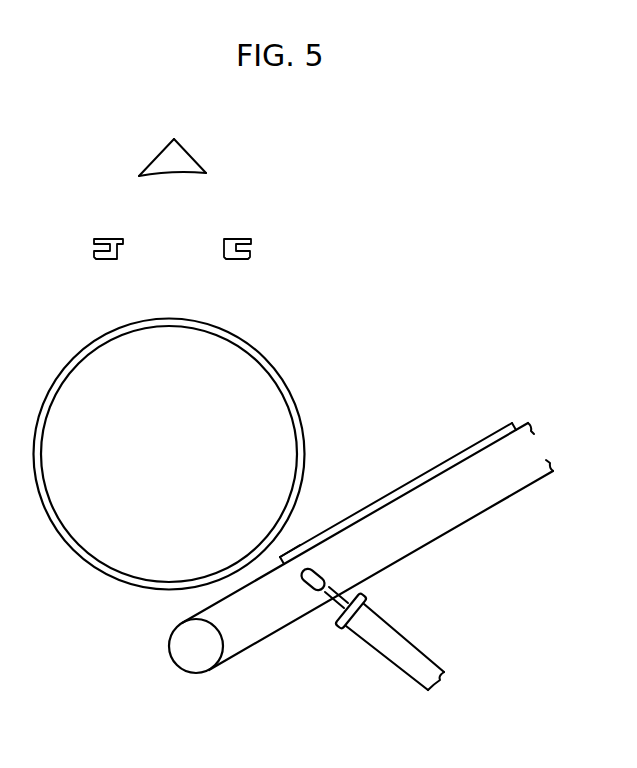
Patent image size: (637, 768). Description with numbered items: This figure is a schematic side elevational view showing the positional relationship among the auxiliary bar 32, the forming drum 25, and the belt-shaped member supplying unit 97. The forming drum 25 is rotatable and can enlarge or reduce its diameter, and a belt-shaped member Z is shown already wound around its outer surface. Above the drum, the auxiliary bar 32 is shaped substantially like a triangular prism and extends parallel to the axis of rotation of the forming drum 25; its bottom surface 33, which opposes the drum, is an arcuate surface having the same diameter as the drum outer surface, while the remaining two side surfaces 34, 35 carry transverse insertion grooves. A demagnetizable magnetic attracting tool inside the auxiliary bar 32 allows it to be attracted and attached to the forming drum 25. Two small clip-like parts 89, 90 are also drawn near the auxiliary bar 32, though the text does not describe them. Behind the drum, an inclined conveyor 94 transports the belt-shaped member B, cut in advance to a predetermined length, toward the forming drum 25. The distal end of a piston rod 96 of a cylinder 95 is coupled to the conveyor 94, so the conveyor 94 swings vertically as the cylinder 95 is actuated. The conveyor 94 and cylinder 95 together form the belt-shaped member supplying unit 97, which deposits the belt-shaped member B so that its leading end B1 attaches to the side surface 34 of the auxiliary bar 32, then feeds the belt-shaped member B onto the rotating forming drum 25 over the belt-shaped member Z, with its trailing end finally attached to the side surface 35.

The auxiliary bar 32 is at (177, 165).
The bottom surface 33 is at (170, 174).
The side surface 34 is at (153, 153).
The side surface 35 is at (195, 158).
The left guide clip 89 is at (92, 240).
The right guide clip 90 is at (253, 241).
The belt-shaped member Z is at (228, 333).
The forming drum 25 is at (185, 445).
The belt-shaped member B is at (398, 483).
The leading end B1 is at (300, 544).
The inclined conveyor 94 is at (472, 518).
The cylinder 95 is at (420, 657).
The piston rod 96 is at (333, 603).
The belt-shaped member supplying unit 97 is at (415, 628).